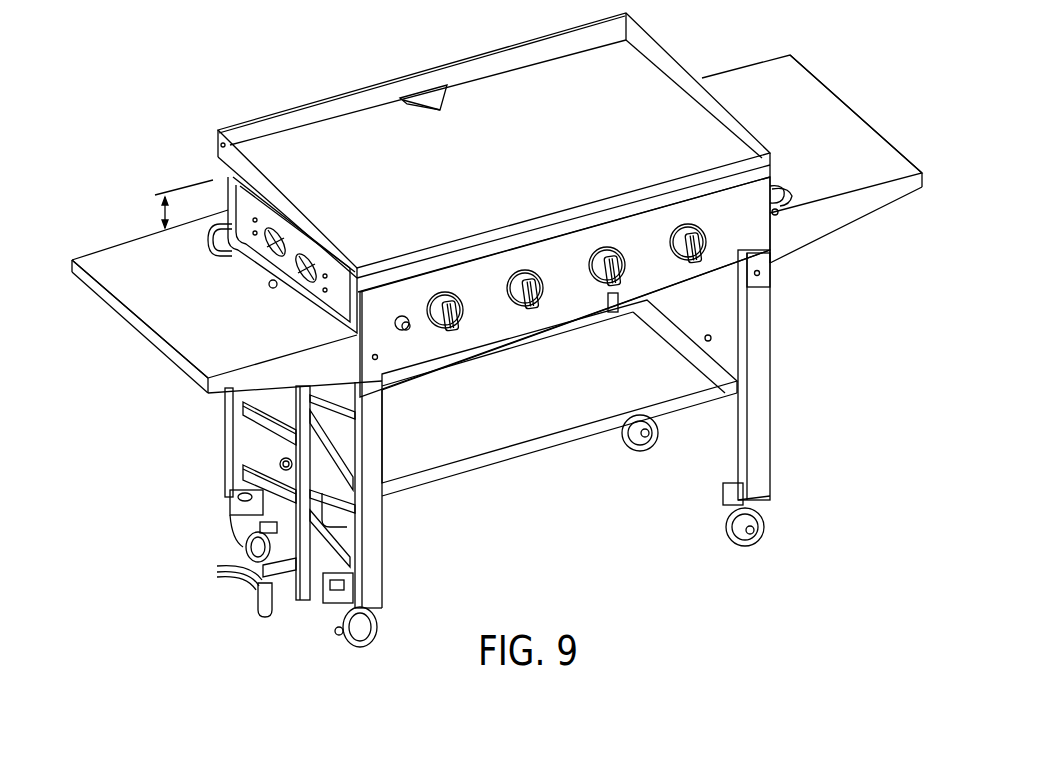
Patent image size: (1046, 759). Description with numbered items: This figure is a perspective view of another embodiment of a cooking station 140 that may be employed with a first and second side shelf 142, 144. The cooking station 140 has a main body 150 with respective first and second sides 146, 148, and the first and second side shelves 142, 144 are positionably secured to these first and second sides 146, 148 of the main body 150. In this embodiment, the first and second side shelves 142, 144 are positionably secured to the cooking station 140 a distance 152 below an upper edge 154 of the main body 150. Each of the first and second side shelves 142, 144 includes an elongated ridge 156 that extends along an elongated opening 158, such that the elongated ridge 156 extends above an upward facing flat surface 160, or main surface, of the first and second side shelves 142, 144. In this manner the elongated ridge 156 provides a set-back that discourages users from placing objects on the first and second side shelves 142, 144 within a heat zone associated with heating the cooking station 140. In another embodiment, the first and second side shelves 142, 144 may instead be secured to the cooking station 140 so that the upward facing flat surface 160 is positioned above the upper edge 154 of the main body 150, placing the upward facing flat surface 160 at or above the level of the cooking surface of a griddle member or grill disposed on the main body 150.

The cooking station 140 is at (263, 100).
The first side shelf 142 is at (84, 254).
The second side shelf 144 is at (810, 66).
The first side 146 is at (343, 310).
The second side 148 is at (772, 180).
The main body 150 is at (705, 272).
The distance 152 is at (158, 214).
The upper edge 154 is at (218, 175).
The elongated ridge 156 is at (230, 254).
The elongated opening 158 is at (268, 284).
The upward facing flat surface 160 is at (182, 334).